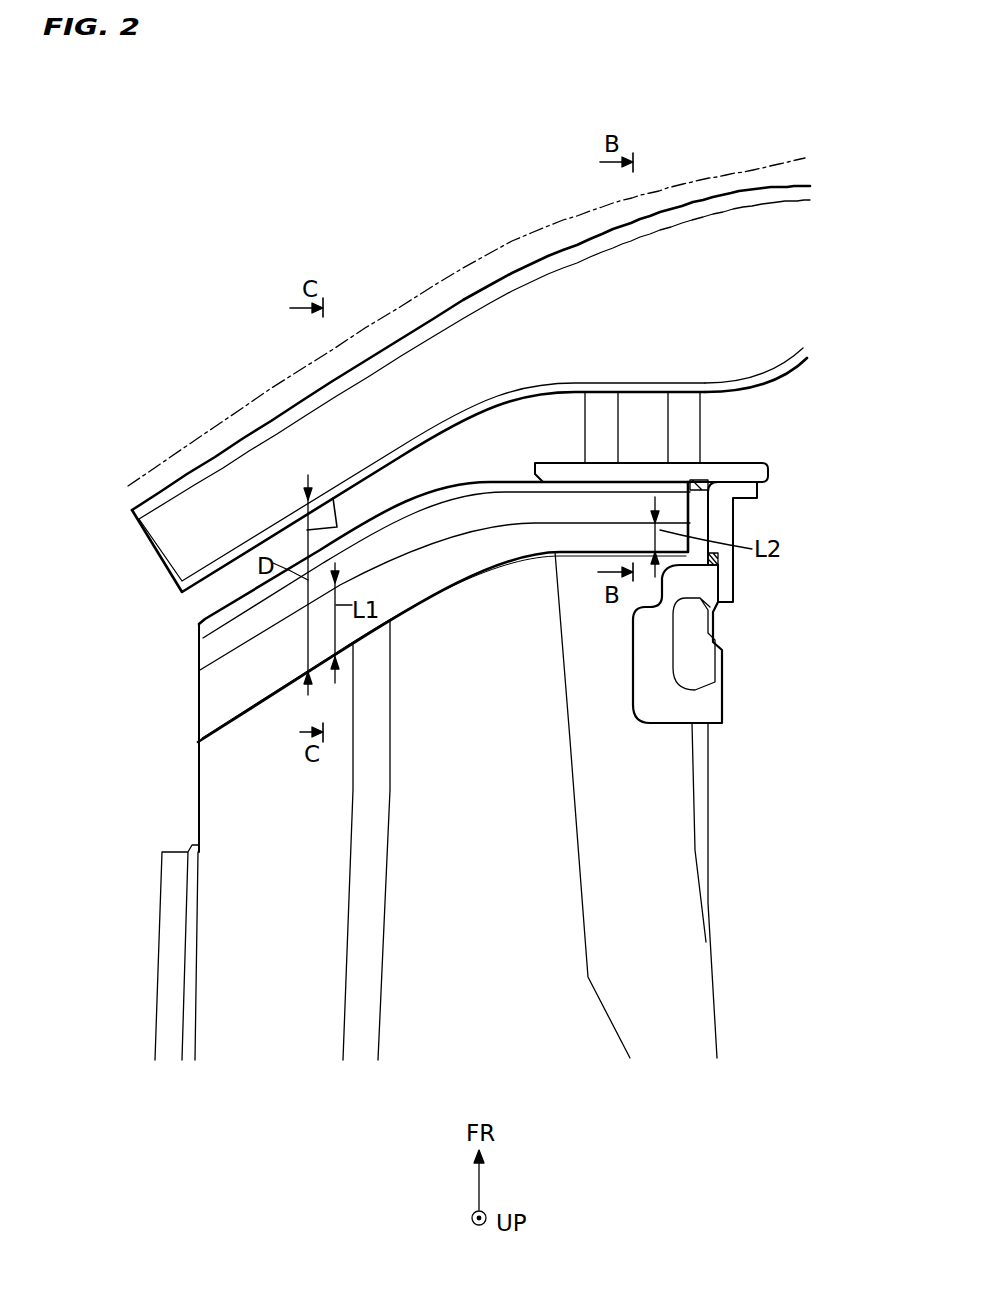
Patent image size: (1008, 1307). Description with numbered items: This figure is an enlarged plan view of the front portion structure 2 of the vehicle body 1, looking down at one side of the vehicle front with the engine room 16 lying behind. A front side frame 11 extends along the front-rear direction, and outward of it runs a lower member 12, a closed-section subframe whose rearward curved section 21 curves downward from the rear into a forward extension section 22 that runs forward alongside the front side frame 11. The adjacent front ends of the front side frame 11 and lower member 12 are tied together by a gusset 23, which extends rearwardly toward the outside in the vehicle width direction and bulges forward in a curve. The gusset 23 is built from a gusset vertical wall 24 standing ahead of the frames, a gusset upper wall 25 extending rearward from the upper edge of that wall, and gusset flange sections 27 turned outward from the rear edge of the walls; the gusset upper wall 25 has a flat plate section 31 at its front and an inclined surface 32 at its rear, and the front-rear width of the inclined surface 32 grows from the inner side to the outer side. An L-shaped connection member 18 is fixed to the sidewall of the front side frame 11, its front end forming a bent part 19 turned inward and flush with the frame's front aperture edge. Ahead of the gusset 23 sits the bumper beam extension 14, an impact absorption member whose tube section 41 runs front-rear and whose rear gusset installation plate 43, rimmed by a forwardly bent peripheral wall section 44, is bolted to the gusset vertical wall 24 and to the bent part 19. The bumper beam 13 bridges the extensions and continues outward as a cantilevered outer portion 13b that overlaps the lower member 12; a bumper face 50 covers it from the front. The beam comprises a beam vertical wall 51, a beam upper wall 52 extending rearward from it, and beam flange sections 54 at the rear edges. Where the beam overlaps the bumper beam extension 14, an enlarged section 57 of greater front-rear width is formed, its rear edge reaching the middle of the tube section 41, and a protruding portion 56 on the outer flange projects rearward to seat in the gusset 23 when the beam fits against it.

The vehicle body 1 is at (225, 185).
The front portion structure 2 is at (357, 667).
The front side frame 11 is at (600, 810).
The lower member 12 is at (159, 952).
The bumper beam 13 is at (515, 344).
The outer portion 13b is at (208, 458).
The bumper beam extension 14 is at (650, 427).
The engine room 16 is at (786, 826).
The connection member 18 is at (731, 583).
The bent part 19 is at (747, 498).
The rearward curved section 21 is at (242, 993).
The forward extension section 22 is at (322, 697).
The gusset 23 is at (190, 694).
The gusset vertical wall 24 is at (210, 614).
The gusset upper wall 25 is at (198, 656).
The gusset flange section 27 is at (213, 735).
The flat plate section 31 is at (210, 643).
The inclined surface 32 is at (213, 707).
The tube section 41 is at (607, 438).
The gusset installation plate 43 is at (717, 489).
The peripheral wall section 44 is at (768, 478).
The bumper face 50 is at (470, 267).
The beam vertical wall 51 is at (713, 203).
The beam upper wall 52 is at (777, 257).
The beam flange section 54 is at (793, 367).
The protruding portion 56 is at (333, 530).
The enlarged section 57 is at (718, 346).